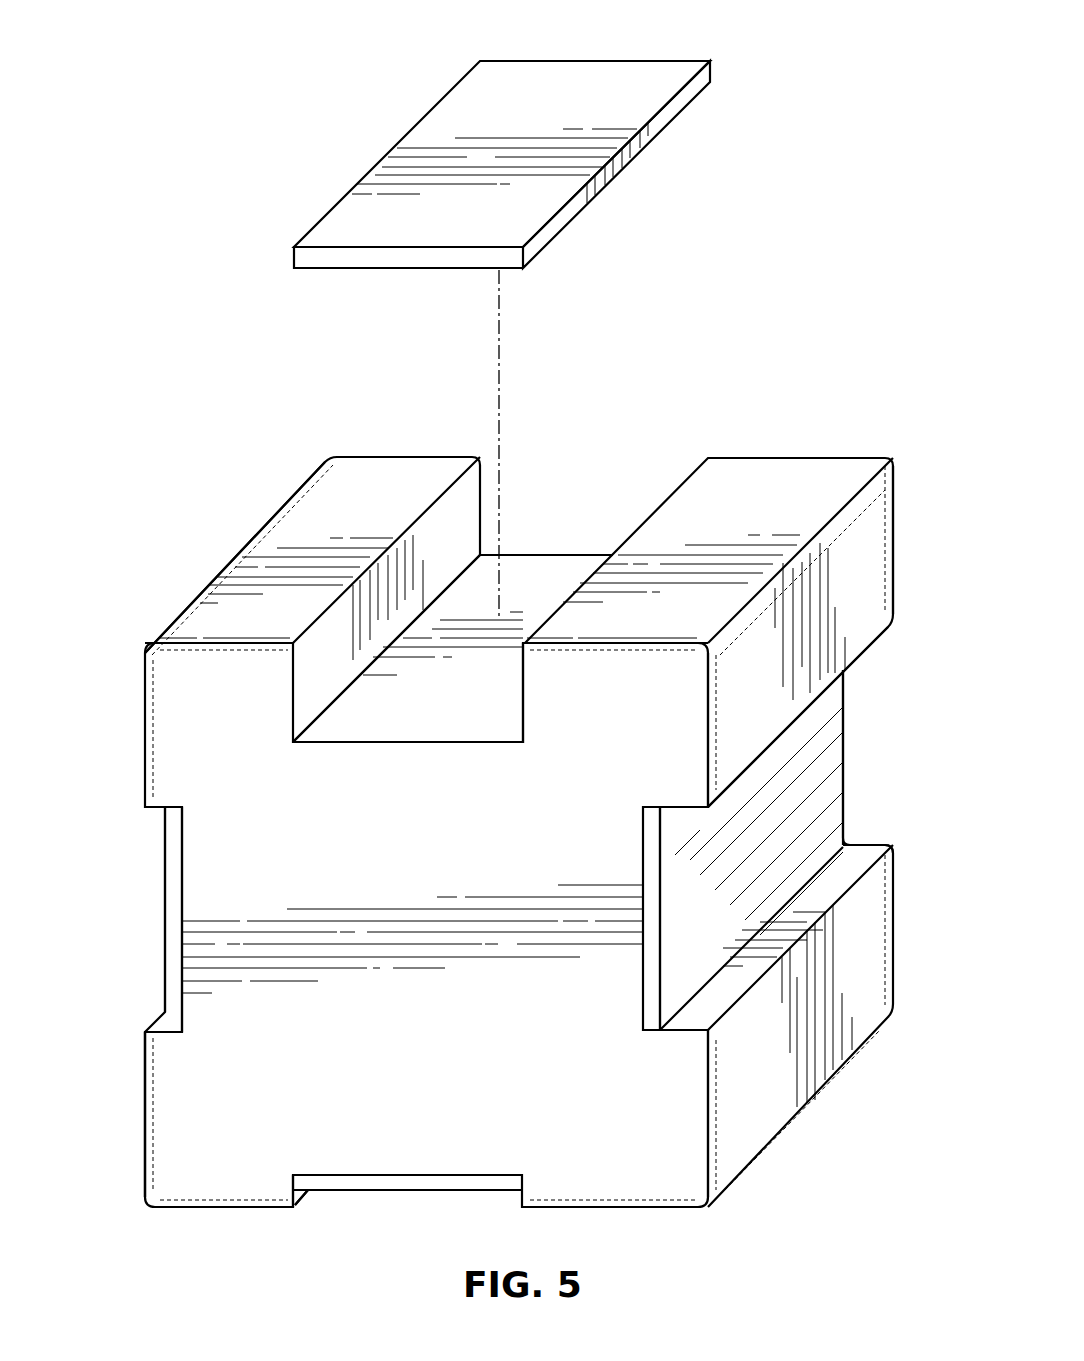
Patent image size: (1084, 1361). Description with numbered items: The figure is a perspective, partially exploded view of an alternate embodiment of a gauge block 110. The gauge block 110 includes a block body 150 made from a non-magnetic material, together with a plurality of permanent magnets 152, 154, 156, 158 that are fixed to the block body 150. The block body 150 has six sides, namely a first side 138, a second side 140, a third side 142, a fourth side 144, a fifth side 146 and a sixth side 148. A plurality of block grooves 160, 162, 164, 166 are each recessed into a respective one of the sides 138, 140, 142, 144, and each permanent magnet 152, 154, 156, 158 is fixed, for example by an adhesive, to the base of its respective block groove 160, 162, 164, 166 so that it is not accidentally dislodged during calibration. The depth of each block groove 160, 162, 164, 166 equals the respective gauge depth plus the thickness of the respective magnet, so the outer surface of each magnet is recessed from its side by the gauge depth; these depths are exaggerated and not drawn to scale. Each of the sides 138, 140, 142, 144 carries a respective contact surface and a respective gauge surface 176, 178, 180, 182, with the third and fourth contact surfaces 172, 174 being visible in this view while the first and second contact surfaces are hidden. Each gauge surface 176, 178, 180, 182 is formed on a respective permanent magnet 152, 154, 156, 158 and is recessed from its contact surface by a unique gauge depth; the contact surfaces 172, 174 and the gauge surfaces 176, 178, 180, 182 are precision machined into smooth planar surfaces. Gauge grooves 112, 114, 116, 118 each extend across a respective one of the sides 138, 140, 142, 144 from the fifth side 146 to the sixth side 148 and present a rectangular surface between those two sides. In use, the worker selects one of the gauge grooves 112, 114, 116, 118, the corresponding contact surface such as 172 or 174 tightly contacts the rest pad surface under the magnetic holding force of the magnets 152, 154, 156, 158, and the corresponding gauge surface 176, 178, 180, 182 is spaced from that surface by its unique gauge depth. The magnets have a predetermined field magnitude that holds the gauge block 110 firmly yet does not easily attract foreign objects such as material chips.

The gauge block 110 is at (843, 222).
The gauge groove 112 is at (412, 1191).
The gauge groove 114 is at (170, 919).
The gauge groove 116 is at (493, 578).
The gauge groove 118 is at (758, 917).
The first side 138 is at (229, 1209).
The second side 140 is at (148, 1160).
The third side 142 is at (808, 462).
The fourth side 144 is at (893, 553).
The fifth side 146 is at (402, 1051).
The sixth side 148 is at (407, 455).
The block body 150 is at (234, 556).
The permanent magnet 152 is at (648, 860).
The permanent magnet 154 is at (364, 1178).
The permanent magnet 156 is at (182, 845).
The permanent magnet 158 is at (521, 143).
The block groove 160 is at (308, 1194).
The block groove 162 is at (163, 812).
The block groove 164 is at (340, 678).
The block groove 166 is at (857, 847).
The third contact surface 172 is at (374, 512).
The fourth contact surface 174 is at (762, 709).
The gauge surface 176 is at (624, 76).
The gauge surface 178 is at (848, 690).
The gauge surface 180 is at (410, 1190).
The gauge surface 182 is at (161, 957).